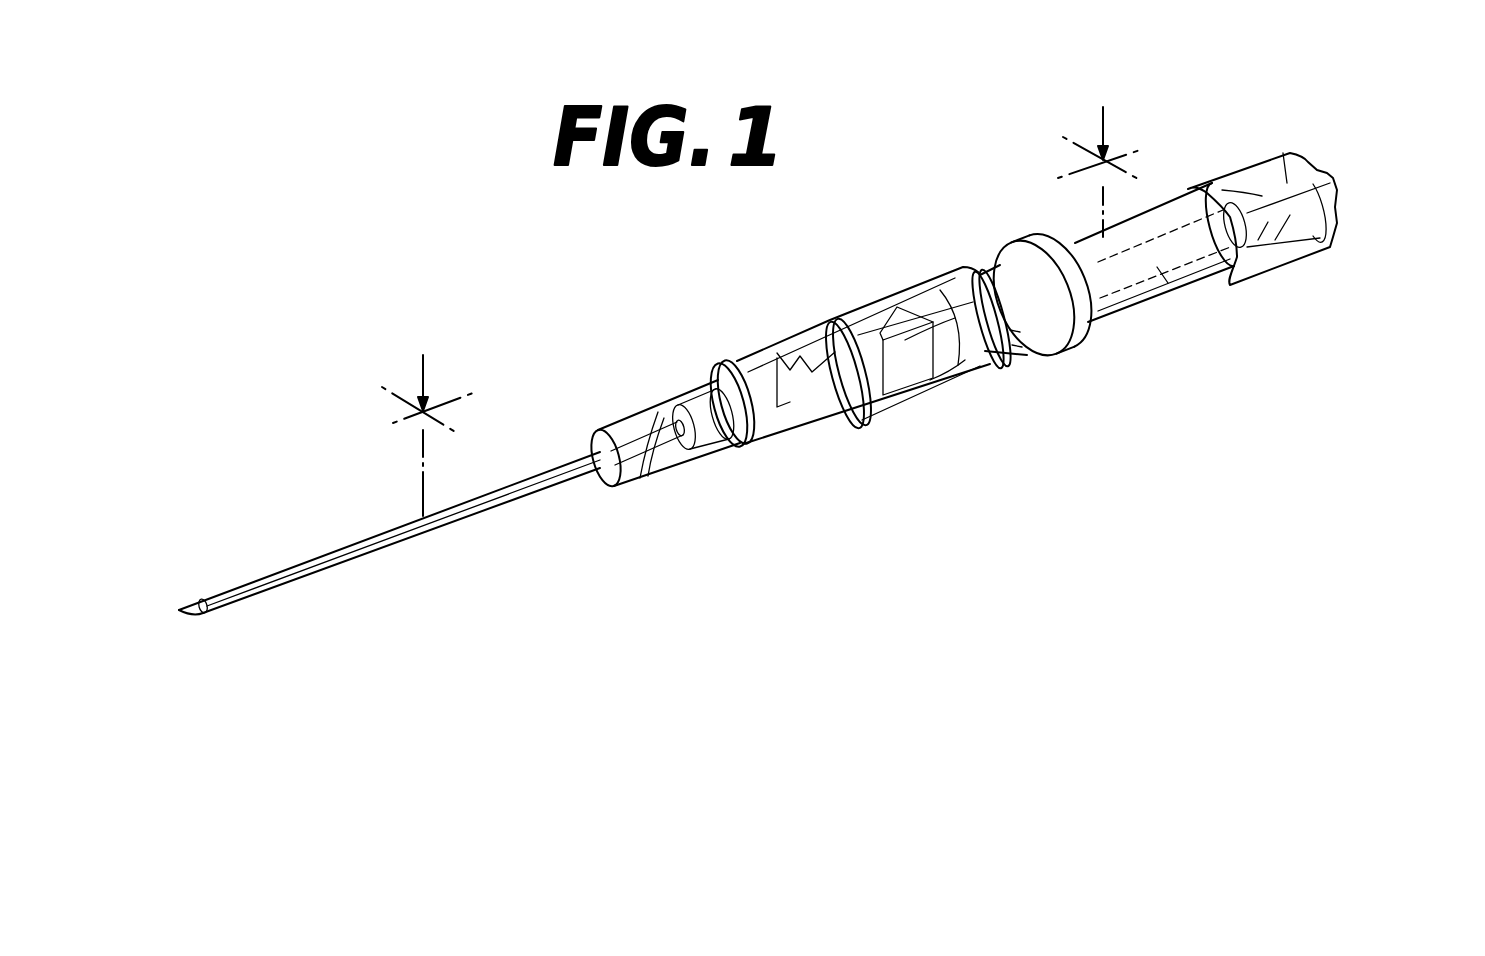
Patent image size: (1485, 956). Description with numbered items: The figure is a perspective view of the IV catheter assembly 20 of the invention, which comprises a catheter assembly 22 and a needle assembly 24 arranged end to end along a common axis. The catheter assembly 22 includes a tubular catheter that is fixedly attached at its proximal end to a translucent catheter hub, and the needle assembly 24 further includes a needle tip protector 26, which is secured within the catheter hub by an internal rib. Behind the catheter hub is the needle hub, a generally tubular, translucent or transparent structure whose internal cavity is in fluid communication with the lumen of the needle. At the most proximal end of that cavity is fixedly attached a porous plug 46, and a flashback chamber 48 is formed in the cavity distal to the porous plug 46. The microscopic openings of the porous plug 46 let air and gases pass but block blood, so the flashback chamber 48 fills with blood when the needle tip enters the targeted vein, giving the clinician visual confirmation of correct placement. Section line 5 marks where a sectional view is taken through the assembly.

The IV catheter assembly 20 is at (557, 613).
The catheter assembly 22 is at (652, 473).
The needle assembly 24 is at (1011, 232).
The needle tip protector 26 is at (867, 317).
The porous plug 46 is at (1310, 210).
The flashback chamber 48 is at (1163, 275).
The section line 5 is at (761, 292).